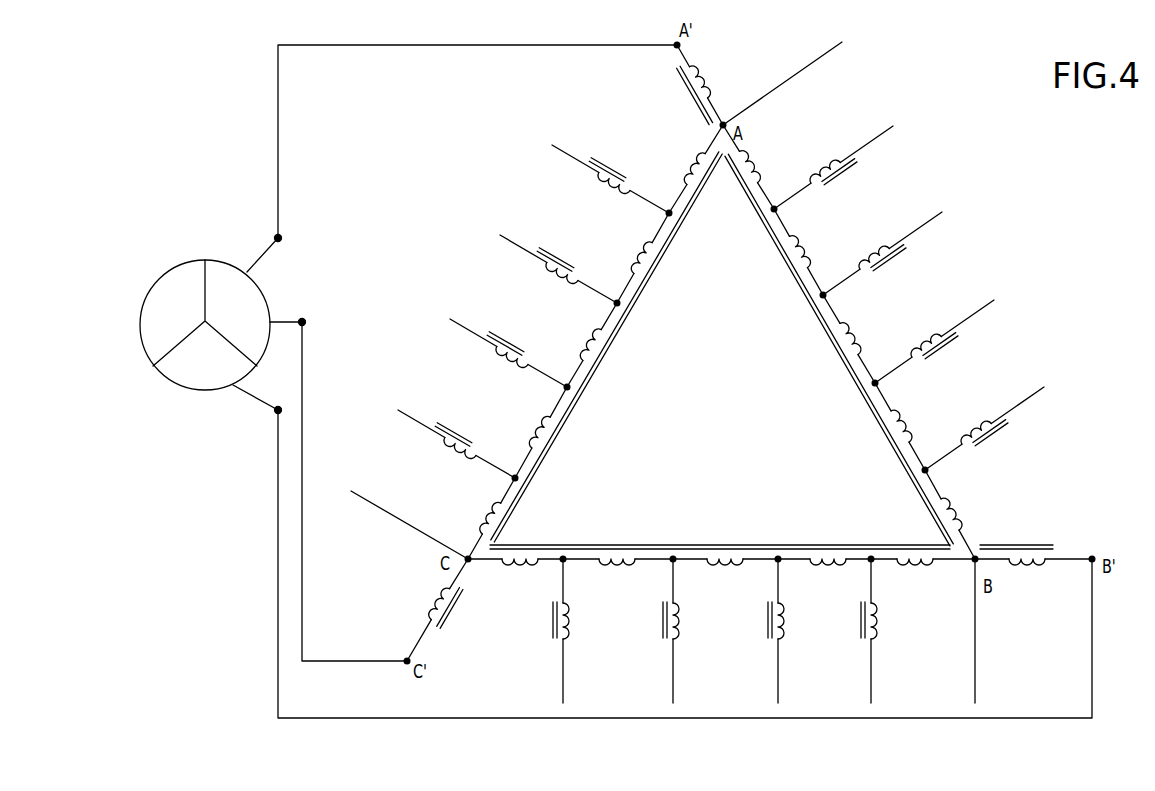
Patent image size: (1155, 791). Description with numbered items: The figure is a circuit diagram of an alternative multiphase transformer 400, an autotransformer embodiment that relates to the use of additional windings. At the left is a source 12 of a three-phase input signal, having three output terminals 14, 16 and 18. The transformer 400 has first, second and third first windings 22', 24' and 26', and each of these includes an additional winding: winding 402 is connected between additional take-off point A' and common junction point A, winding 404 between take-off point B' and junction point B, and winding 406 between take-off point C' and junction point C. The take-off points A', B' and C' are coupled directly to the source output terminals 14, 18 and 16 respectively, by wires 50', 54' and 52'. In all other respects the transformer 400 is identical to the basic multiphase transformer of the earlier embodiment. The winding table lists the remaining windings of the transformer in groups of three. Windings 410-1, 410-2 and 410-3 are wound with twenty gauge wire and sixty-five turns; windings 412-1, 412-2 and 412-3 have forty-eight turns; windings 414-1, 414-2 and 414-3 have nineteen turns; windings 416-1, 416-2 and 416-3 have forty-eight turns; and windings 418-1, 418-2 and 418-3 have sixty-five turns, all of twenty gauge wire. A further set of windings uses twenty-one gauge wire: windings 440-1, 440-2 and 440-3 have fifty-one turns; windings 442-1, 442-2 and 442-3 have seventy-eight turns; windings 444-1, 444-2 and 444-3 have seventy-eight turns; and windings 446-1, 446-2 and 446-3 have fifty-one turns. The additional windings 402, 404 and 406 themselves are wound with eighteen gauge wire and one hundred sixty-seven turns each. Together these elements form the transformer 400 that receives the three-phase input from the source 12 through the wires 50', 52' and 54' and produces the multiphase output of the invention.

The source 12 is at (203, 257).
The output terminal 14 is at (281, 238).
The output terminal 16 is at (304, 320).
The output terminal 18 is at (276, 411).
The wire 50' is at (477, 141).
The wire 52' is at (354, 491).
The wire 54' is at (662, 564).
The multiphase transformer 400 is at (728, 412).
The additional winding 402 is at (711, 90).
The additional winding 404 is at (1025, 556).
The additional winding 406 is at (433, 607).
The first winding 22' is at (839, 350).
The first winding 24' is at (720, 529).
The first winding 26' is at (606, 347).
The winding 410-1 is at (757, 171).
The winding 412-1 is at (806, 255).
The winding 414-1 is at (856, 344).
The winding 416-1 is at (906, 431).
The winding 418-1 is at (957, 518).
The winding 410-2 is at (916, 567).
The winding 412-2 is at (830, 567).
The winding 414-2 is at (724, 567).
The winding 416-2 is at (616, 567).
The winding 418-2 is at (520, 567).
The winding 410-3 is at (485, 518).
The winding 412-3 is at (537, 428).
The winding 414-3 is at (586, 345).
The winding 416-3 is at (636, 257).
The winding 418-3 is at (690, 168).
The winding 440-1 is at (826, 172).
The winding 442-1 is at (895, 256).
The winding 444-1 is at (948, 352).
The winding 446-1 is at (998, 440).
The winding 440-2 is at (878, 632).
The winding 442-2 is at (785, 632).
The winding 444-2 is at (680, 632).
The winding 446-2 is at (570, 632).
The winding 440-3 is at (452, 452).
The winding 442-3 is at (504, 362).
The winding 444-3 is at (552, 276).
The winding 446-3 is at (604, 186).